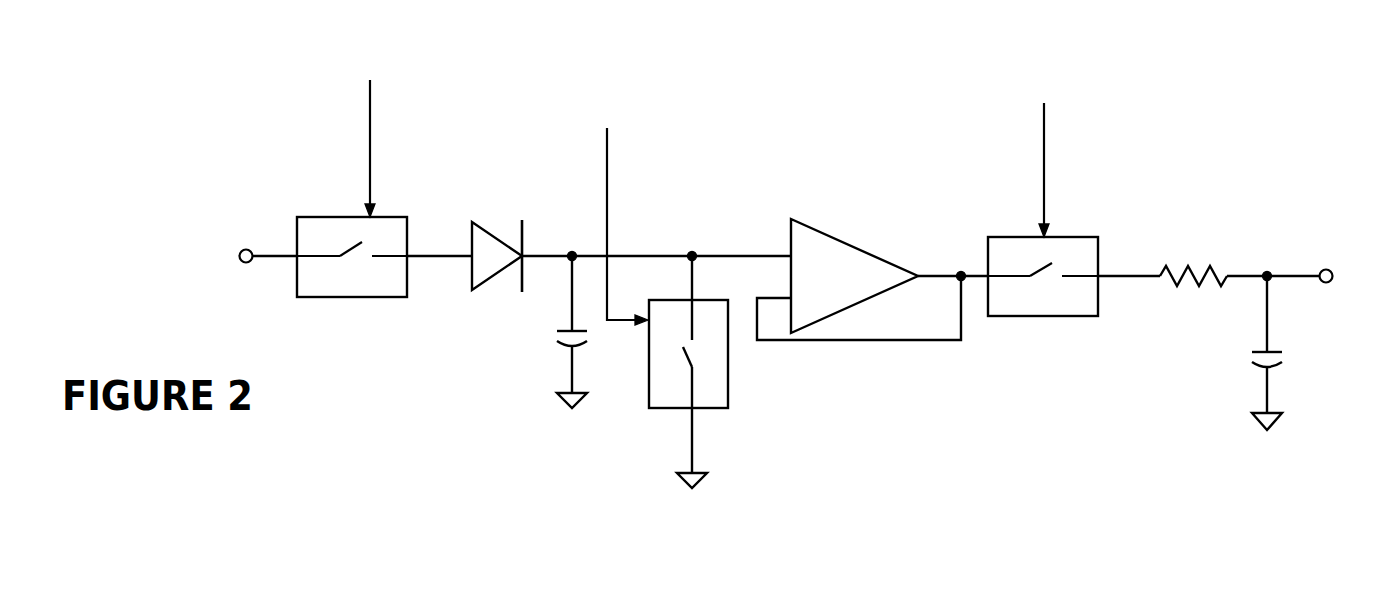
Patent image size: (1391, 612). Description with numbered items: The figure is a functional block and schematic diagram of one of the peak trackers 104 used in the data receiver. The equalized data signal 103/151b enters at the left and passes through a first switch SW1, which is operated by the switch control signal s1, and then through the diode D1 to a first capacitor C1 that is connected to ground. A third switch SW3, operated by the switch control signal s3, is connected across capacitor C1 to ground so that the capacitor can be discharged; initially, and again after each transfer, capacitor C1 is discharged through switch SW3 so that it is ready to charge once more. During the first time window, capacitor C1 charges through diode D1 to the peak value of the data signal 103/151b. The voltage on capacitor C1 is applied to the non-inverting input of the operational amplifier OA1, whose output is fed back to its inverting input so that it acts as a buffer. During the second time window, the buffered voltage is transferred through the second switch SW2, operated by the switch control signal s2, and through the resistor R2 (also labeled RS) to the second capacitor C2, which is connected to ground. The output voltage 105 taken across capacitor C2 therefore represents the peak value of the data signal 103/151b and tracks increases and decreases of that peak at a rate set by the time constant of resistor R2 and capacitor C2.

The equalized data signal 103 is at (275, 252).
The equalized data signal 151b is at (223, 221).
The switch control signal s1 is at (368, 131).
The switch SW1 is at (380, 297).
The diode D1 is at (489, 230).
The capacitor C1 is at (550, 332).
The switch control signal s3 is at (625, 207).
The switch SW3 is at (728, 378).
The operational amplifier OA1 is at (868, 252).
The switch control signal s2 is at (1044, 151).
The switch SW2 is at (1050, 316).
The resistor R2 is at (1193, 278).
The resistor RS is at (1193, 278).
The output voltage 105 is at (1302, 272).
The capacitor C2 is at (1290, 353).
The peak tracker 104 is at (1256, 506).